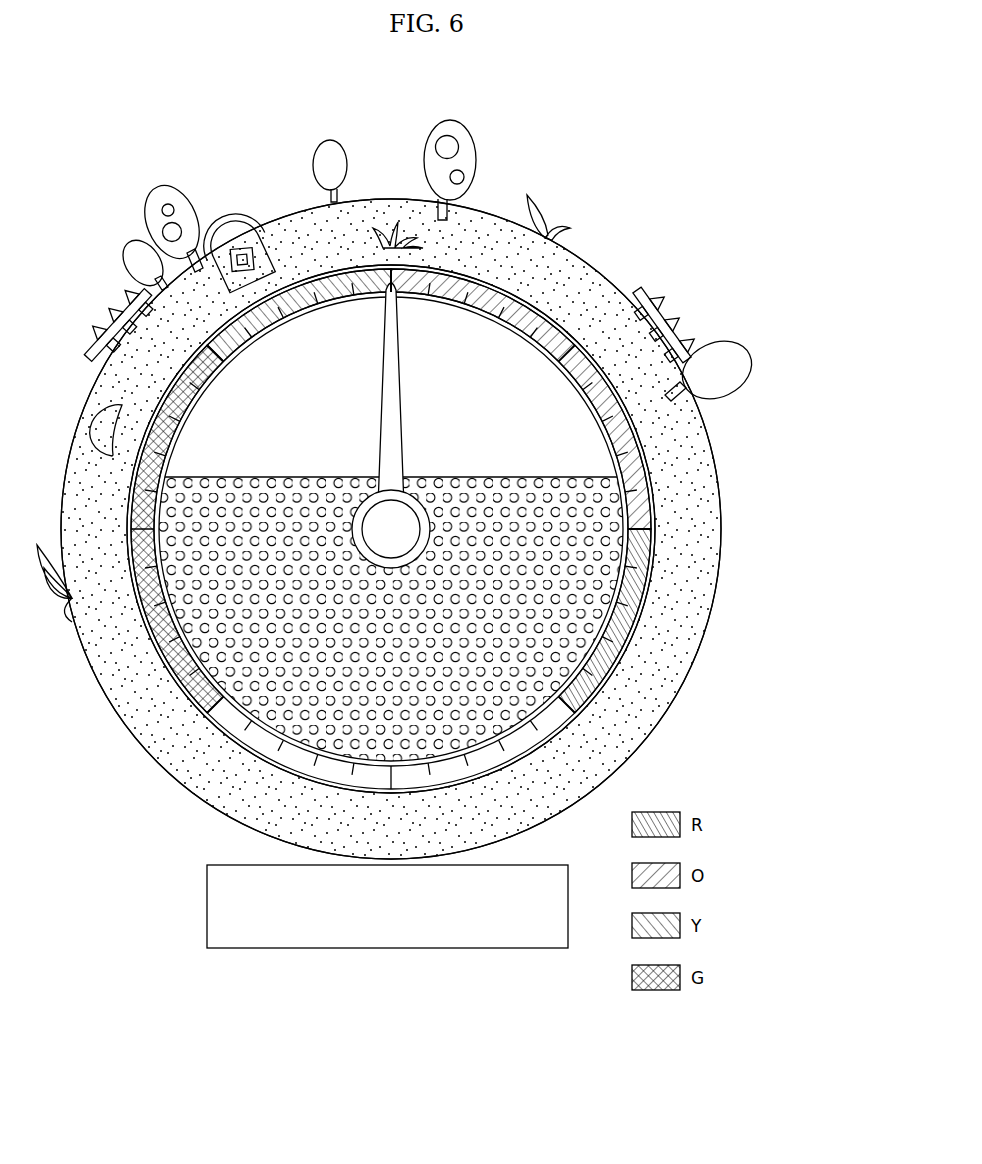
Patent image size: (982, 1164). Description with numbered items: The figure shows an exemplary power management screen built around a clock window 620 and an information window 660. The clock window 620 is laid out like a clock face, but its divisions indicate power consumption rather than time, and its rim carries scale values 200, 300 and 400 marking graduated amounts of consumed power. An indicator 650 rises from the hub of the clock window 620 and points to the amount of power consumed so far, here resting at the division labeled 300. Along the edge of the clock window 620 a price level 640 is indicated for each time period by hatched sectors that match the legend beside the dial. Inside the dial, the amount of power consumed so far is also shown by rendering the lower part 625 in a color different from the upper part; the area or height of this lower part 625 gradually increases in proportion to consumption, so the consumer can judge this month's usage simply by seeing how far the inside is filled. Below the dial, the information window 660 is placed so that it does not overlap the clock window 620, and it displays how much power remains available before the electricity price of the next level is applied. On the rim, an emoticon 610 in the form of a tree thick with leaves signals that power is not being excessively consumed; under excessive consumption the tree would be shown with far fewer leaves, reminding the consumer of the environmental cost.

The emoticon 610 is at (467, 153).
The clock window 620 is at (455, 496).
The lower part 625 is at (587, 510).
The price level 640 is at (620, 618).
The indicator 650 is at (453, 355).
The information window 660 is at (391, 949).
The scale value 200 is at (233, 363).
The scale value 300 is at (393, 297).
The scale value 400 is at (549, 362).